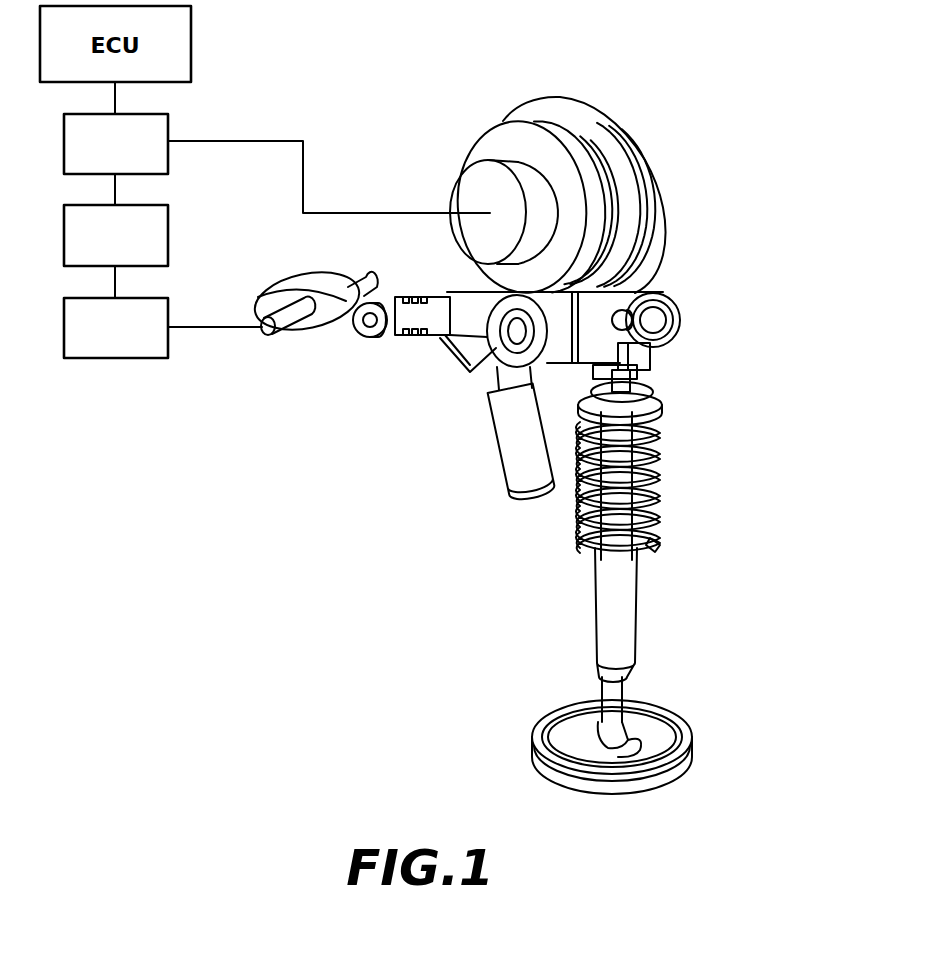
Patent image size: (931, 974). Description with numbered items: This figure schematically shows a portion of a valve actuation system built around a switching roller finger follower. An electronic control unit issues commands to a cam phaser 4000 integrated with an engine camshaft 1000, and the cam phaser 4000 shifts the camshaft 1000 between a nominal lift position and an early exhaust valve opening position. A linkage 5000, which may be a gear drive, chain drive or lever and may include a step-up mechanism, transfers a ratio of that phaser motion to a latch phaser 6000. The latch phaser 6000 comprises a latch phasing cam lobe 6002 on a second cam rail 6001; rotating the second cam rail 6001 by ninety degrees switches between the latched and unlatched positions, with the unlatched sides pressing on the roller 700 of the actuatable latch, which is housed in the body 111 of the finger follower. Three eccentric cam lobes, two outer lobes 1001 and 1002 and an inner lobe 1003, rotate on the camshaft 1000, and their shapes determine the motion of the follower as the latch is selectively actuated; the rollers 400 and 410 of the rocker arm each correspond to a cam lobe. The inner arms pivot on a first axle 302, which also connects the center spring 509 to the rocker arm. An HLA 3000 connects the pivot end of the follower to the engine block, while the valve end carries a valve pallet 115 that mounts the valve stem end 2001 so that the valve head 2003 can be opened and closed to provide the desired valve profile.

The cam phaser 4000 is at (146, 158).
The linkage 5000 is at (146, 249).
The latch phaser 6000 is at (146, 342).
The second cam rail 6001 is at (262, 336).
The latch phasing cam lobe 6002 is at (292, 279).
The roller 700 is at (365, 338).
The body of the switching roller finger follower 111 is at (472, 296).
The roller 400 is at (498, 345).
The roller 410 is at (620, 277).
The engine camshaft 1000 is at (458, 173).
The outer cam lobe 1001 is at (473, 137).
The outer cam lobe 1002 is at (660, 203).
The inner cam lobe 1003 is at (523, 97).
The first axle 302 is at (632, 317).
The center spring 509 is at (670, 317).
The valve pallet 115 is at (651, 361).
The valve stem end 2001 is at (632, 378).
The valve head 2003 is at (532, 732).
The HLA 3000 is at (507, 444).